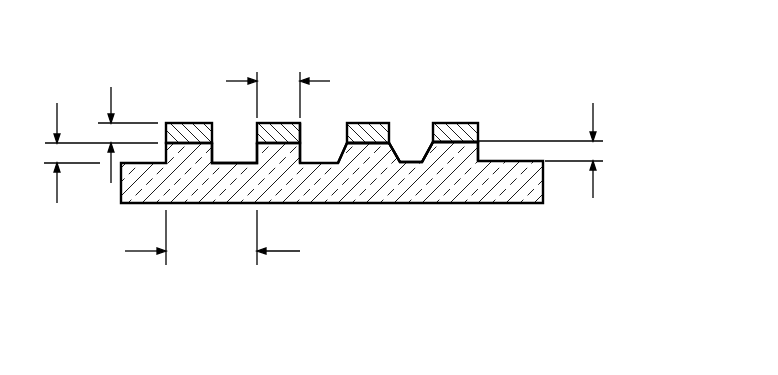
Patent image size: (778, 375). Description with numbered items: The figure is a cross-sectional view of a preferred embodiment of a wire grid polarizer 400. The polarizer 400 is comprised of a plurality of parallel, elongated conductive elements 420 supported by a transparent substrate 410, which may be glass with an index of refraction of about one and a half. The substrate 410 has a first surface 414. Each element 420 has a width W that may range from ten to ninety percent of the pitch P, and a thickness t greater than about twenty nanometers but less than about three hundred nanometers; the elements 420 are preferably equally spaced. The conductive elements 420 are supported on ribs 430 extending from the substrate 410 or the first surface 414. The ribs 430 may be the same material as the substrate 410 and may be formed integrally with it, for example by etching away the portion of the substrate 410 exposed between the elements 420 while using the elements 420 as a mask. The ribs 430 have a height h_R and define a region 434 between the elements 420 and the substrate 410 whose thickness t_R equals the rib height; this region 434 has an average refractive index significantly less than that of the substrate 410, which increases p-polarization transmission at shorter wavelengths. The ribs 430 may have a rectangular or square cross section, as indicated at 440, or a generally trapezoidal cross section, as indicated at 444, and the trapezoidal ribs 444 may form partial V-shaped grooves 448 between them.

The wire grid polarizer 400 is at (660, 170).
The transparent substrate 410 is at (543, 187).
The first surface 414 is at (232, 162).
The conductive elements 420 is at (452, 122).
The ribs 430 is at (308, 150).
The region 434 is at (493, 124).
The rectangular rib 440 is at (452, 152).
The trapezoidal rib 444 is at (363, 155).
The partial V-shaped groove 448 is at (408, 153).